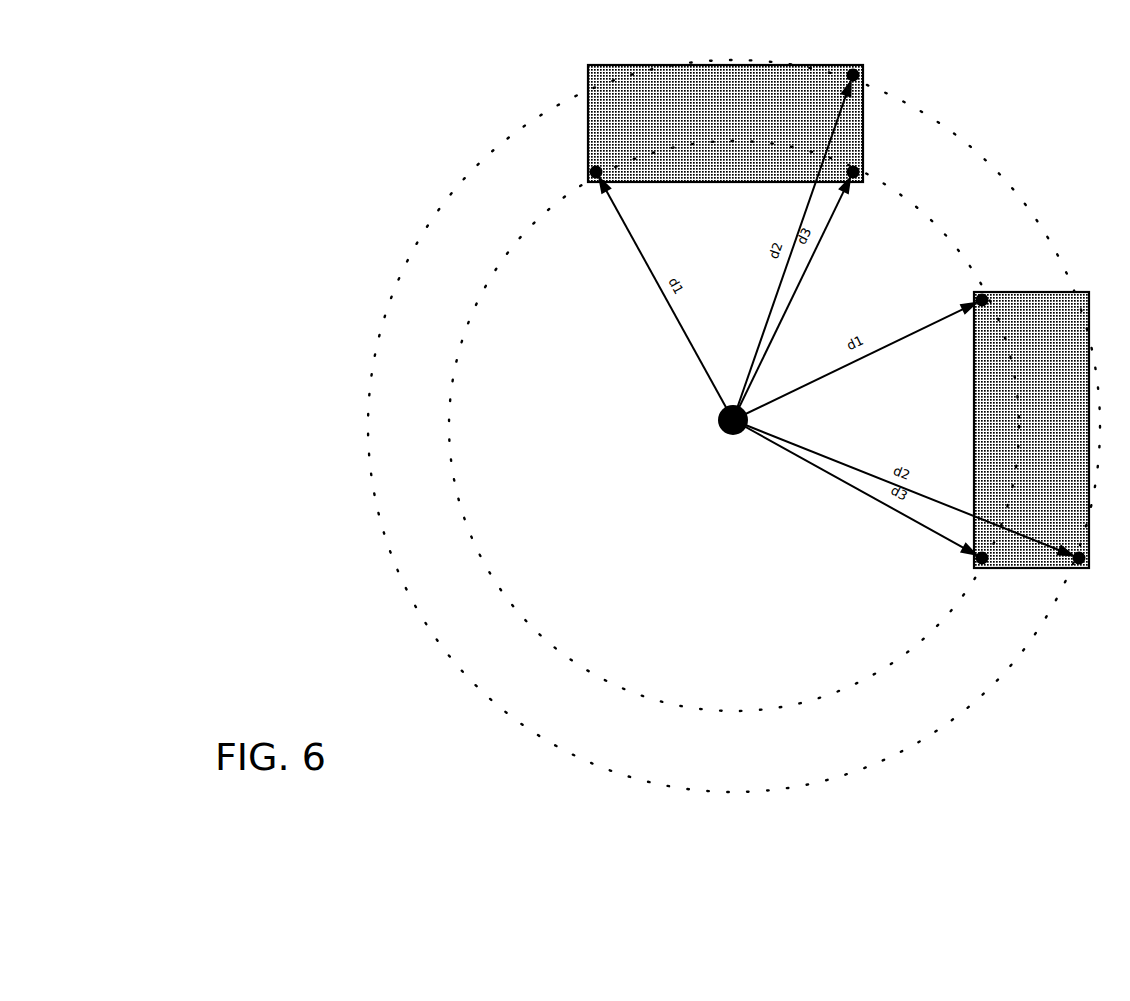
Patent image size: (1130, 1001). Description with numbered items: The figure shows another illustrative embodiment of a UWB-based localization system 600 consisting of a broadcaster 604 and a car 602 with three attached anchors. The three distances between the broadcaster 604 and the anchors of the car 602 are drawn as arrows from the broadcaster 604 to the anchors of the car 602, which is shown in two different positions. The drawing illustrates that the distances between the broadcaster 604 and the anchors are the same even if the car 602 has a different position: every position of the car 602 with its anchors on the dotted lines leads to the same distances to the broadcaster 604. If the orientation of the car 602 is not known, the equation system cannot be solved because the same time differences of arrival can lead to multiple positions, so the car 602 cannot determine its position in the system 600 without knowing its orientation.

The UWB-based localization system 600 is at (349, 151).
The car 602 is at (720, 106).
The broadcaster 604 is at (720, 429).